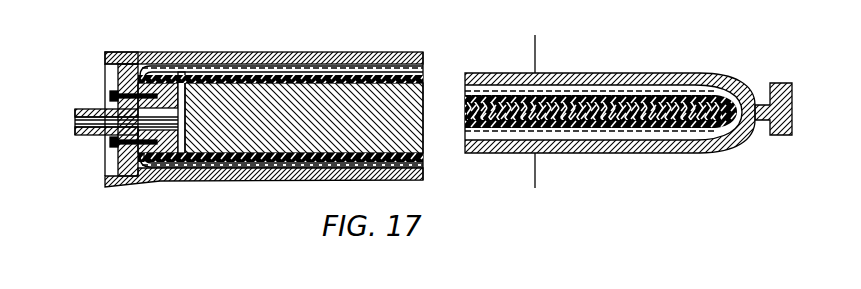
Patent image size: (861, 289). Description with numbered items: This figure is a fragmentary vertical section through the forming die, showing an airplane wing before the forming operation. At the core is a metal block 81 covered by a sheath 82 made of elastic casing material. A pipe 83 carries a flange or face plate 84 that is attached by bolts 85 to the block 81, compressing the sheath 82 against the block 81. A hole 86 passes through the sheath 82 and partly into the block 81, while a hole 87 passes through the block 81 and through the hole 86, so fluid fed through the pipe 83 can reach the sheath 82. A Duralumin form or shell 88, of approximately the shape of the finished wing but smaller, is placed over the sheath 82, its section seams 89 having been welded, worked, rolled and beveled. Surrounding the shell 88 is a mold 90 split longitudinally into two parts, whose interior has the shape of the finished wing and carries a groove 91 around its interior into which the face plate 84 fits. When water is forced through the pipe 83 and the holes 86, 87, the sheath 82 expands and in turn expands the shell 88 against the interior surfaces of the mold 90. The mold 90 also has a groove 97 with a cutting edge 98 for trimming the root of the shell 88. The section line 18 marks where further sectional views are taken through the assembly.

The section line 18 is at (535, 36).
The metal block 81 is at (396, 60).
The sheath 82 is at (353, 100).
The pipe 83 is at (90, 135).
The face plate 84 is at (118, 80).
The bolts 85 is at (110, 96).
The hole 86 is at (167, 123).
The hole 87 is at (246, 70).
The form or shell 88 is at (284, 67).
The section seams 89 is at (693, 92).
The mold 90 is at (525, 78).
The groove 91 is at (122, 56).
The groove 97 is at (176, 64).
The cutting edge 98 is at (184, 70).